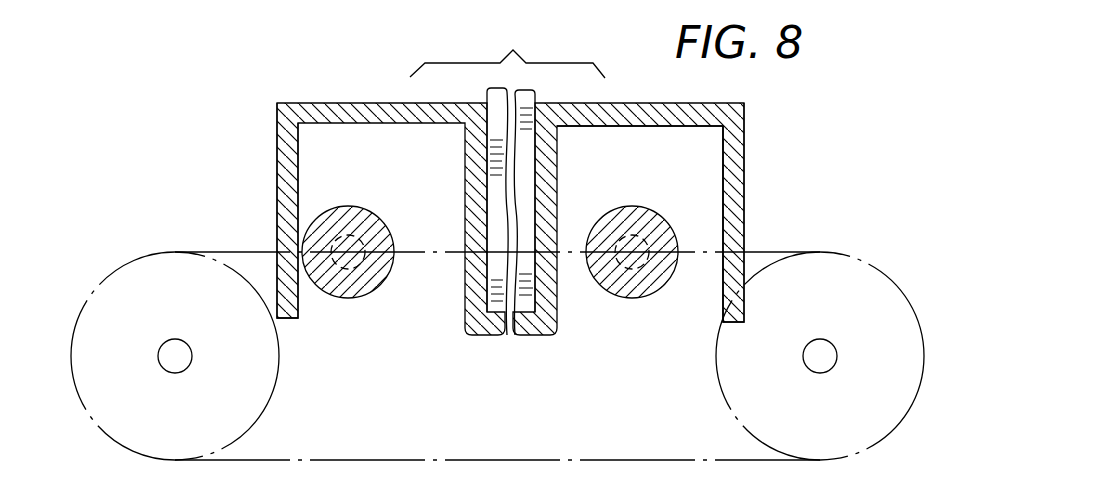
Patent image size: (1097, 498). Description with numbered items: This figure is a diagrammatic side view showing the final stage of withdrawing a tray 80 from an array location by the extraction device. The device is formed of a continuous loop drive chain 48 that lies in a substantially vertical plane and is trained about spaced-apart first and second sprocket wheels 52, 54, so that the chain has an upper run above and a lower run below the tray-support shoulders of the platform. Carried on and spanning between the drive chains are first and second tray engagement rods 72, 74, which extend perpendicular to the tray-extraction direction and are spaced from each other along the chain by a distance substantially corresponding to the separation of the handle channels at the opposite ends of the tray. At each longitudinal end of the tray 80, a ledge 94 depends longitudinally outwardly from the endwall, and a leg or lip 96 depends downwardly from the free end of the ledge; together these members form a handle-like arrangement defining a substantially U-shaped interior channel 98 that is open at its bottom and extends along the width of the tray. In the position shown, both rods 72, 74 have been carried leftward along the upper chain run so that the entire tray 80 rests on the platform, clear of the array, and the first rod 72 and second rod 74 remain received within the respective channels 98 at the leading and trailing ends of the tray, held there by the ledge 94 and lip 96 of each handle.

The drive belt or chain 48 is at (515, 460).
The first roller or sprocket wheel 52 is at (200, 423).
The second roller or sprocket wheel 54 is at (835, 424).
The first tray engagement rod 72 is at (378, 195).
The second tray engagement rod 74 is at (620, 293).
The tray 80 is at (452, 54).
The ledge 94 is at (347, 103).
The leg or lip 96 is at (280, 174).
The U-shaped interior channel 98 is at (660, 183).